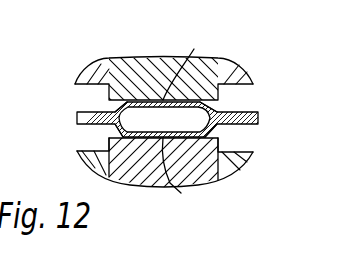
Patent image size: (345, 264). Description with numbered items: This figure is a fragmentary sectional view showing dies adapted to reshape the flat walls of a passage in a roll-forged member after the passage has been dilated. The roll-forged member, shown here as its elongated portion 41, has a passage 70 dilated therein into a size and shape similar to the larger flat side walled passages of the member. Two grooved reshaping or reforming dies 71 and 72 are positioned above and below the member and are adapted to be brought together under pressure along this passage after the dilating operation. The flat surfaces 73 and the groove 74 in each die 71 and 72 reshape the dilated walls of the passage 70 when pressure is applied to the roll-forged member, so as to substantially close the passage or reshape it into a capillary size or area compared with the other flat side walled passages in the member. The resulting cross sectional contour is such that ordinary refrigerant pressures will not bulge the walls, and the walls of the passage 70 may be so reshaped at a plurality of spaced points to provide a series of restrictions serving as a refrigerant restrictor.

The reshaping die 71 is at (133, 72).
The reshaping die 72 is at (197, 176).
The groove 74 is at (185, 121).
The second or lower elongated portion of the roll-forged member 41 is at (257, 118).
The passage 70 is at (130, 120).
The flat surfaces 73 is at (116, 108).